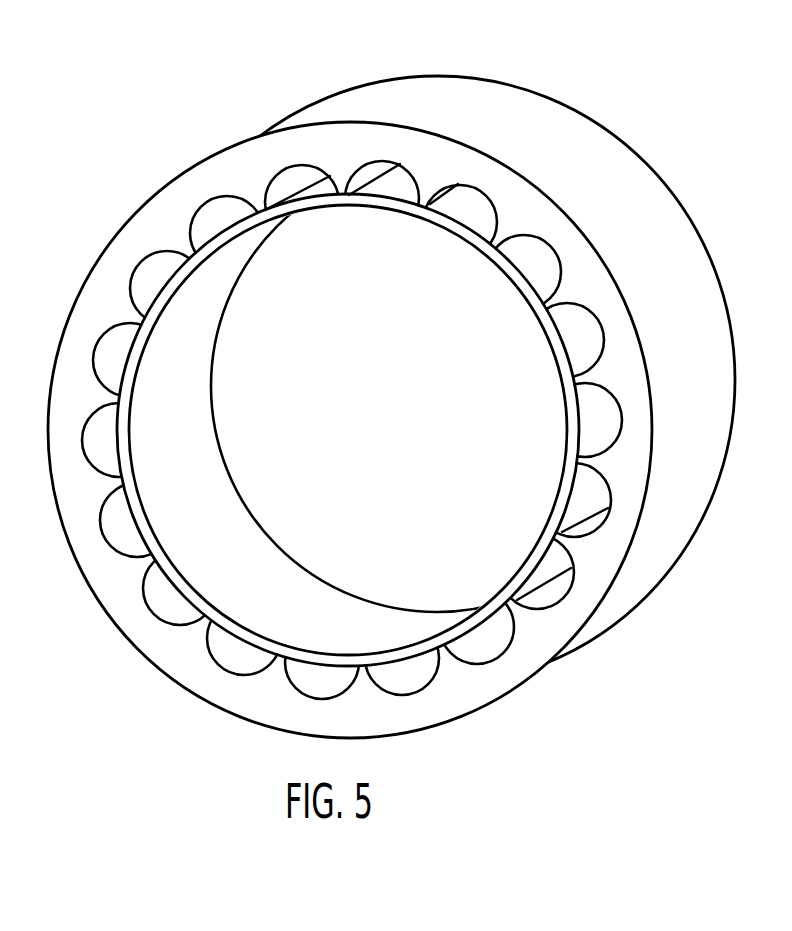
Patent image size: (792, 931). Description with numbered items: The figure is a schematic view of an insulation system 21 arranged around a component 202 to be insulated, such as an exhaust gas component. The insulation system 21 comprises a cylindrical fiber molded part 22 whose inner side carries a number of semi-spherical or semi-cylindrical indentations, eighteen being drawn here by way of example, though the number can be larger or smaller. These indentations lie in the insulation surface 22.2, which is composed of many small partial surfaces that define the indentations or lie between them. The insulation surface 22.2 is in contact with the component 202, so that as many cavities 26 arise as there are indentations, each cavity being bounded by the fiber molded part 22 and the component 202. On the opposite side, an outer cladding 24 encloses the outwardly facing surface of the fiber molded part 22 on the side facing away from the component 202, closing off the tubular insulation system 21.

The insulation system 21 is at (703, 177).
The fiber molded part 22 is at (530, 640).
The insulation surface 22.2 is at (492, 238).
The outer cladding 24 is at (592, 150).
The cavities 26 is at (157, 270).
The component to be insulated 202 is at (568, 417).